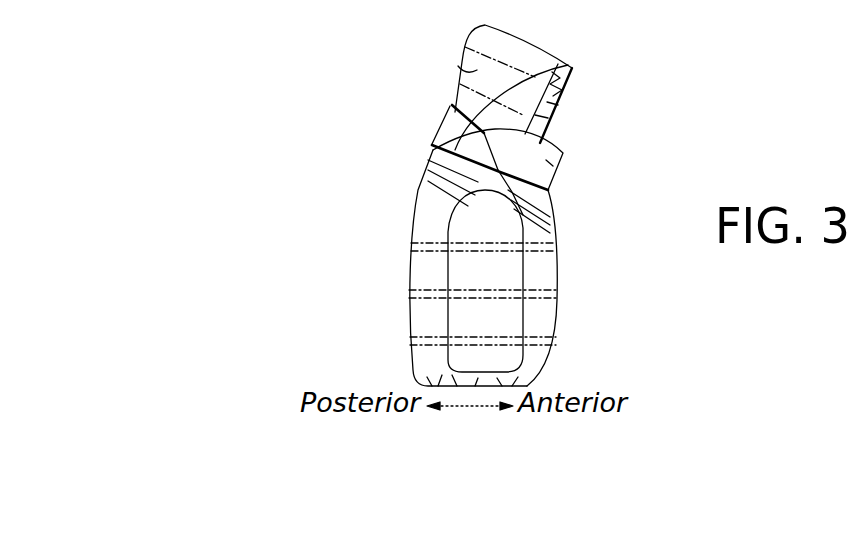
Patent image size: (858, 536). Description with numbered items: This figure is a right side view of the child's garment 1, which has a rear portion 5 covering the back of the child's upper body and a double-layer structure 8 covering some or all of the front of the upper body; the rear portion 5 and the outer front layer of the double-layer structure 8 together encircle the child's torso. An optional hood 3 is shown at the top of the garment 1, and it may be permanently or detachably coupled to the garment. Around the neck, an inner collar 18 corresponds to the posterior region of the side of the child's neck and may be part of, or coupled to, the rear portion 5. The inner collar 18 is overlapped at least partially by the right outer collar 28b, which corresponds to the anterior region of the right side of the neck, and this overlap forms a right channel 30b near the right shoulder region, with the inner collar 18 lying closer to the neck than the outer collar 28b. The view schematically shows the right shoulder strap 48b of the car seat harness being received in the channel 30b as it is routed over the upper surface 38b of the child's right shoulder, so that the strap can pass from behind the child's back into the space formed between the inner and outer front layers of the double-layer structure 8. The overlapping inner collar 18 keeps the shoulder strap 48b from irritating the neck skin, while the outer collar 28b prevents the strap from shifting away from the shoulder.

The garment 1 is at (283, 78).
The hood 3 is at (455, 72).
The rear portion 5 is at (398, 253).
The double-layer structure 8 is at (570, 272).
The inner collar 18 is at (448, 115).
The right outer collar 28b is at (567, 165).
The right channel 30b is at (573, 70).
The upper surface of the right shoulder 38b is at (433, 150).
The right shoulder strap 48b is at (445, 124).